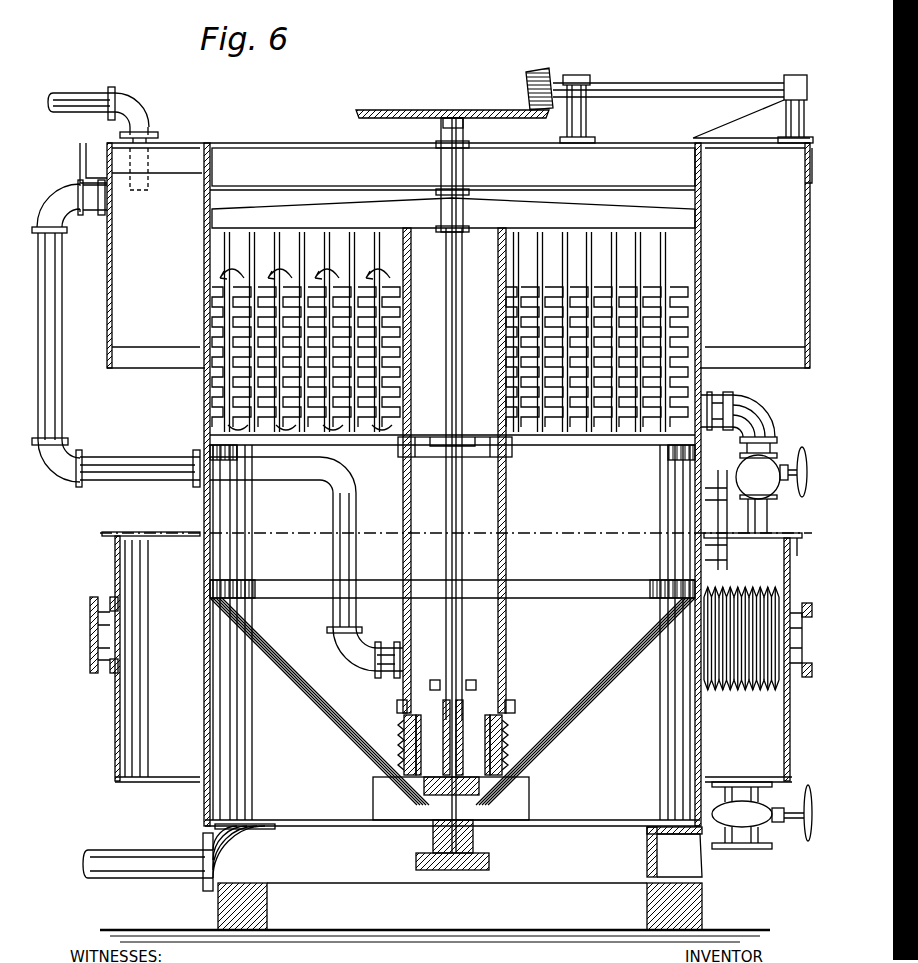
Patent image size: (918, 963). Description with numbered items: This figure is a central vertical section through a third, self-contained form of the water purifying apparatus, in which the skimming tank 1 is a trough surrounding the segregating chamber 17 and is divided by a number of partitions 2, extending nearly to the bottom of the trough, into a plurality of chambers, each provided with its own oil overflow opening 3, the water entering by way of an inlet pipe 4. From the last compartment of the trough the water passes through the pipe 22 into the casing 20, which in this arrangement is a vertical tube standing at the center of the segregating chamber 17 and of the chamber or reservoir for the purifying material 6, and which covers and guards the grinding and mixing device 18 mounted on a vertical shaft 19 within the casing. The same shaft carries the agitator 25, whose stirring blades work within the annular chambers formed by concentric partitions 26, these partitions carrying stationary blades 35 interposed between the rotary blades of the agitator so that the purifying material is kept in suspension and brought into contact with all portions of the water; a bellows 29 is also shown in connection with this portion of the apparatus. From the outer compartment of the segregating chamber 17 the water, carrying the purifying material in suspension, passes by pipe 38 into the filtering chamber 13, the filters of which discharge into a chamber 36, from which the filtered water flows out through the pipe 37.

The skimming tank 1 is at (465, 169).
The partitions 2 is at (459, 255).
The oil overflow opening 3 is at (100, 168).
The inlet pipe 4 is at (85, 95).
The chamber or reservoir for the purifying material 6 is at (452, 484).
The filtering chamber 13 is at (758, 659).
The segregating chamber 17 is at (475, 346).
The grinding and mixing device 18 is at (520, 718).
The vertical shaft 19 is at (465, 565).
The casing 20 is at (510, 500).
The pipe 22 is at (217, 431).
The agitator 25 is at (452, 167).
The concentric partitions 26 is at (262, 242).
The bellows 29 is at (741, 629).
The stationary blades 35 is at (240, 292).
The chamber 36 is at (452, 701).
The pipe 37 is at (160, 824).
The pipe 38 is at (745, 412).